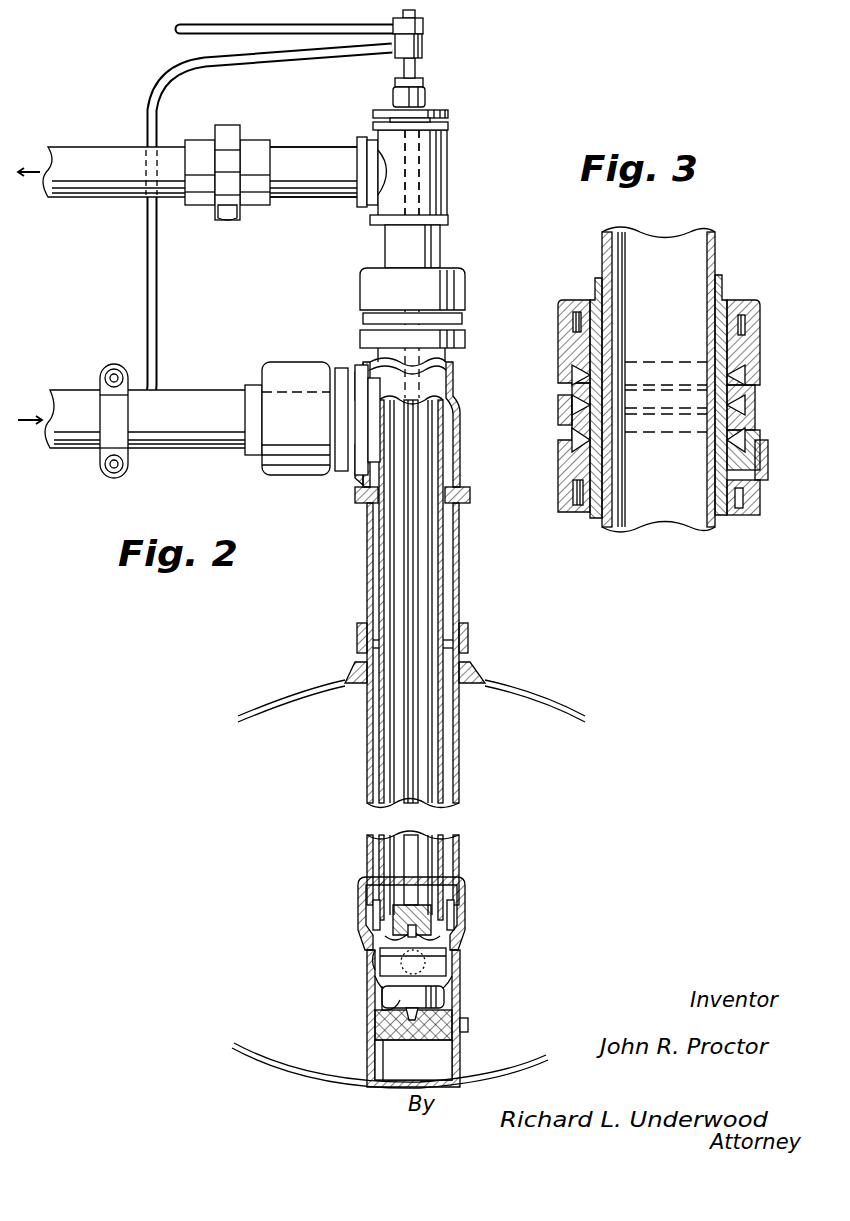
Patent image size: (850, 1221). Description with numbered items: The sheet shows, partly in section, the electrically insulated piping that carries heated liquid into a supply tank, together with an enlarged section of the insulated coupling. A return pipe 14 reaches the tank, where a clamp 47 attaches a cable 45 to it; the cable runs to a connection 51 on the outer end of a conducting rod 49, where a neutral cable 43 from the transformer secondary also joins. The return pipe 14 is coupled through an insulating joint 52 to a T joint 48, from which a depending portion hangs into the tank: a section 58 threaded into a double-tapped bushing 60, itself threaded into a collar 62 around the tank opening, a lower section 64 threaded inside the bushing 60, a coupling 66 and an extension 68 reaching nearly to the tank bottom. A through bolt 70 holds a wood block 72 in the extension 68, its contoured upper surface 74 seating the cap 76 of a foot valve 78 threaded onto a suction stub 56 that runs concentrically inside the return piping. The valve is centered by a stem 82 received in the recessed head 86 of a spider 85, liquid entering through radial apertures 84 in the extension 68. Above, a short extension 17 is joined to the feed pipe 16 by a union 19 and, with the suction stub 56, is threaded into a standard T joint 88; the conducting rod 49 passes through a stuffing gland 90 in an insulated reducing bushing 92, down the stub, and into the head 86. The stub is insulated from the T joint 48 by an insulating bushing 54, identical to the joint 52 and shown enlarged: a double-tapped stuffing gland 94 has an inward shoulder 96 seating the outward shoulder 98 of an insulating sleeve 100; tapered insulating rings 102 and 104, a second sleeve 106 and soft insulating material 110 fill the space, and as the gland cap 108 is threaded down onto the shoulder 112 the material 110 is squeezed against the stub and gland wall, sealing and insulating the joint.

In FIG. 2, the return pipe 14 is at (212, 450).
In FIG. 2, the feed pipe 16 is at (68, 155).
In FIG. 2, the short extension 17 is at (322, 192).
In FIG. 2, the union 19 is at (246, 140).
In FIG. 2, the neutral cable 43 is at (190, 35).
In FIG. 2, the cable 45 is at (146, 252).
In FIG. 2, the clamp 47 is at (98, 372).
In FIG. 2, the T joint 48 is at (461, 412).
In FIG. 3, the T joint 48 is at (570, 492).
In FIG. 2, the conducting rod 49 is at (416, 68).
In FIG. 2, the connection 51 is at (424, 30).
In FIG. 2, the insulating joint 52 is at (280, 362).
In FIG. 2, the insulating bushing 54 is at (460, 292).
In FIG. 2, the suction stub 56 is at (440, 242).
In FIG. 3, the suction stub 56 is at (716, 250).
In FIG. 2, the section 58 is at (459, 570).
In FIG. 2, the double-tapped bushing 60 is at (468, 634).
In FIG. 2, the collar 62 is at (472, 674).
In FIG. 2, the lower section 64 is at (367, 750).
In FIG. 2, the coupling 66 is at (466, 912).
In FIG. 2, the extension 68 is at (462, 1058).
In FIG. 2, the through bolt 70 is at (472, 1024).
In FIG. 2, the wood block 72 is at (395, 1020).
In FIG. 2, the contoured upper surface 74 is at (448, 992).
In FIG. 2, the cap 76 is at (395, 996).
In FIG. 2, the foot valve 78 is at (440, 958).
In FIG. 2, the valve stem 82 is at (376, 958).
In FIG. 2, the radially disposed apertures 84 is at (455, 972).
In FIG. 2, the spider 85 is at (372, 915).
In FIG. 2, the recessed central head portion 86 is at (430, 898).
In FIG. 2, the T joint 88 is at (432, 172).
In FIG. 2, the stuffing gland 90 is at (428, 96).
In FIG. 2, the insulated reducing bushing 92 is at (448, 114).
In FIG. 3, the double-tapped stuffing gland 94 is at (575, 402).
In FIG. 3, the annular shoulder 96 is at (738, 516).
In FIG. 3, the annular shoulder 98 is at (750, 448).
In FIG. 3, the insulating sleeve 100 is at (565, 455).
In FIG. 3, the insulating ring 102 is at (745, 400).
In FIG. 3, the insulating ring 104 is at (742, 360).
In FIG. 3, the insulating sleeve 106 is at (740, 318).
In FIG. 3, the gland cap 108 is at (746, 322).
In FIG. 3, the insulating material 110 is at (585, 442).
In FIG. 3, the shoulder 112 is at (590, 300).